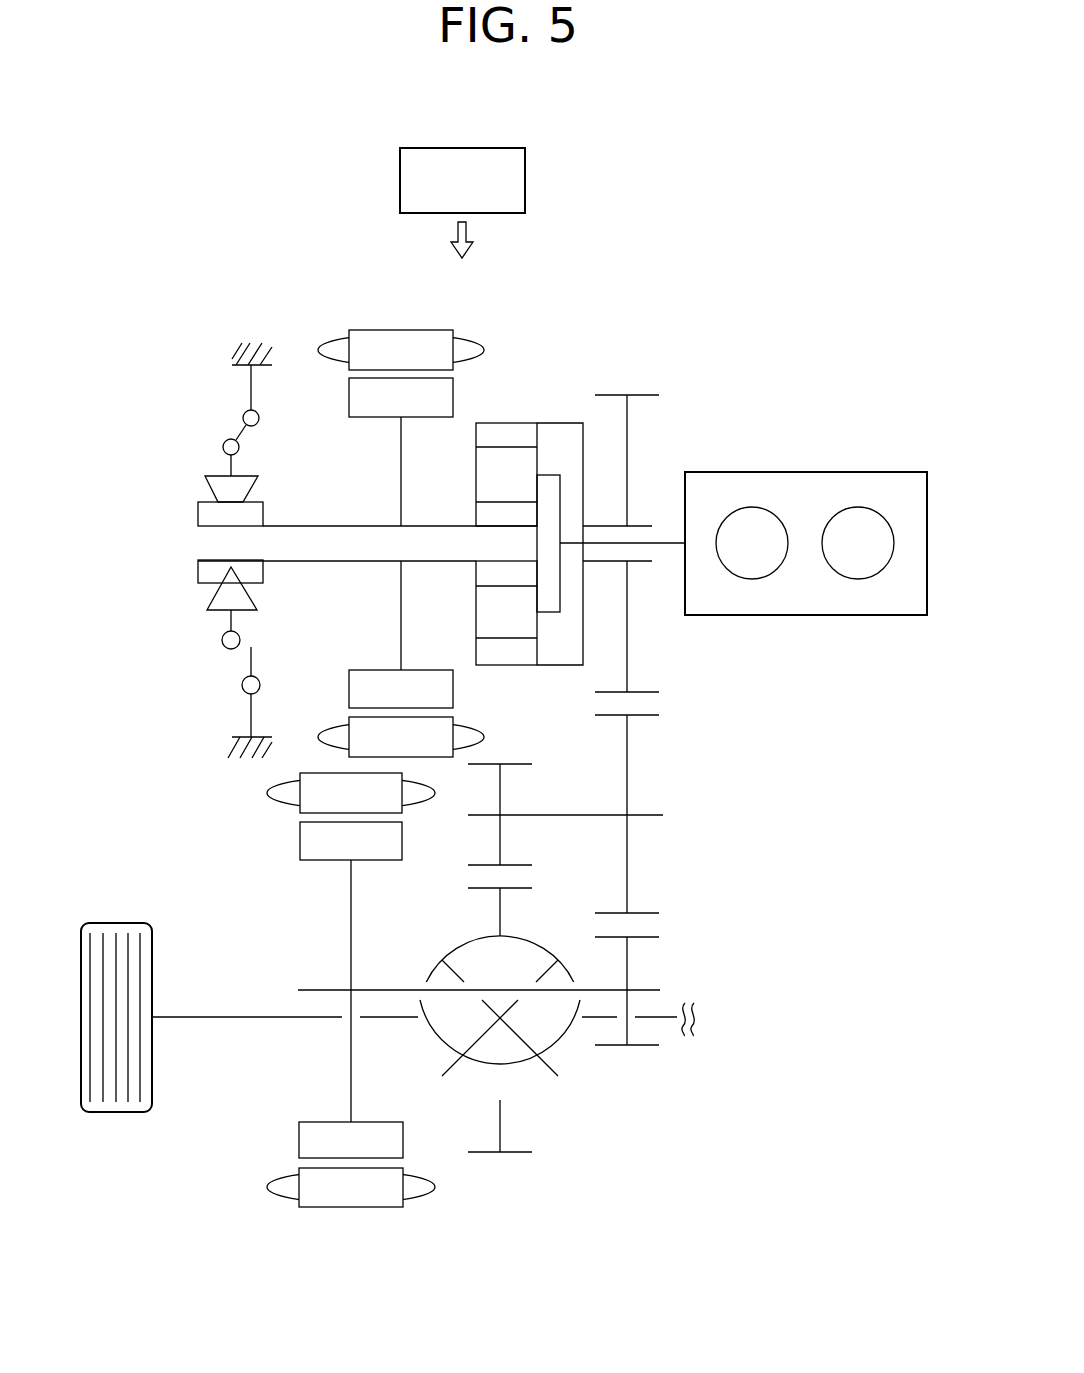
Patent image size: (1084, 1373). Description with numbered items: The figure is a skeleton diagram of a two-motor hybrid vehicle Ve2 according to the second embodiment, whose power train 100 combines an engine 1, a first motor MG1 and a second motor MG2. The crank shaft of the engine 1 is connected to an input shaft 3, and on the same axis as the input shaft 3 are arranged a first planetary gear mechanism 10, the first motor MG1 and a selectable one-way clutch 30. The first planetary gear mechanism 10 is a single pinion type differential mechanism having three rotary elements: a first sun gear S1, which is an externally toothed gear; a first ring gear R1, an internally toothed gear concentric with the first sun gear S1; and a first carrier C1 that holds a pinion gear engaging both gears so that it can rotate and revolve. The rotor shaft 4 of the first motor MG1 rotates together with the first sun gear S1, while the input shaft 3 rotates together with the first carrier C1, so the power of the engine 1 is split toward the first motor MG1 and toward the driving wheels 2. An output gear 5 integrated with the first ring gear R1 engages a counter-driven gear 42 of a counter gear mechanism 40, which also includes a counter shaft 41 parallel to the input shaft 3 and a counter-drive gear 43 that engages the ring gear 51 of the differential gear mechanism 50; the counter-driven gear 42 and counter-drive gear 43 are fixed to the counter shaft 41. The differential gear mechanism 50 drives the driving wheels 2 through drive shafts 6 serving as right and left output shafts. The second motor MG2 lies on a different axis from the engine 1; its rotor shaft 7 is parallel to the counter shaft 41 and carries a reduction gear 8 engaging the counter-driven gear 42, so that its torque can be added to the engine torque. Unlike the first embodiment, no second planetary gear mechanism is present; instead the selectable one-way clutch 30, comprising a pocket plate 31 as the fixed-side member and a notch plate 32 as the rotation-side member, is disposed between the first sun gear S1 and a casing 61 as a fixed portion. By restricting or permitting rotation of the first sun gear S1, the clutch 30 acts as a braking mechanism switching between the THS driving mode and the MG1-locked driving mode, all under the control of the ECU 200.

The ECU 200 is at (495, 148).
The power train 100 is at (619, 262).
The HV vehicle Ve2 is at (809, 287).
The first motor MG1 is at (397, 310).
The second motor MG2 is at (343, 1228).
The casing 61 is at (251, 340).
The selectable one-way clutch 30 is at (208, 404).
The notch plate 32 is at (196, 562).
The pocket plate 31 is at (251, 712).
The first planetary gear mechanism 10 is at (390, 480).
The first ring gear R1 is at (495, 436).
The first carrier C1 is at (548, 473).
The first sun gear S1 is at (488, 572).
The rotor shaft 4 is at (433, 526).
The input shaft 3 is at (668, 545).
The engine 1 is at (845, 472).
The counter gear mechanism 40 is at (622, 654).
The output gear 5 is at (640, 692).
The counter-driven gear 42 is at (640, 715).
The counter shaft 41 is at (572, 815).
The counter-drive gear 43 is at (515, 865).
The ring gear 51 is at (515, 888).
The differential gear mechanism 50 is at (570, 1097).
The rotor shaft 7 is at (388, 990).
The reduction gear 8 is at (640, 937).
The drive shafts 6 is at (228, 1018).
The driving wheels 2 is at (109, 1112).